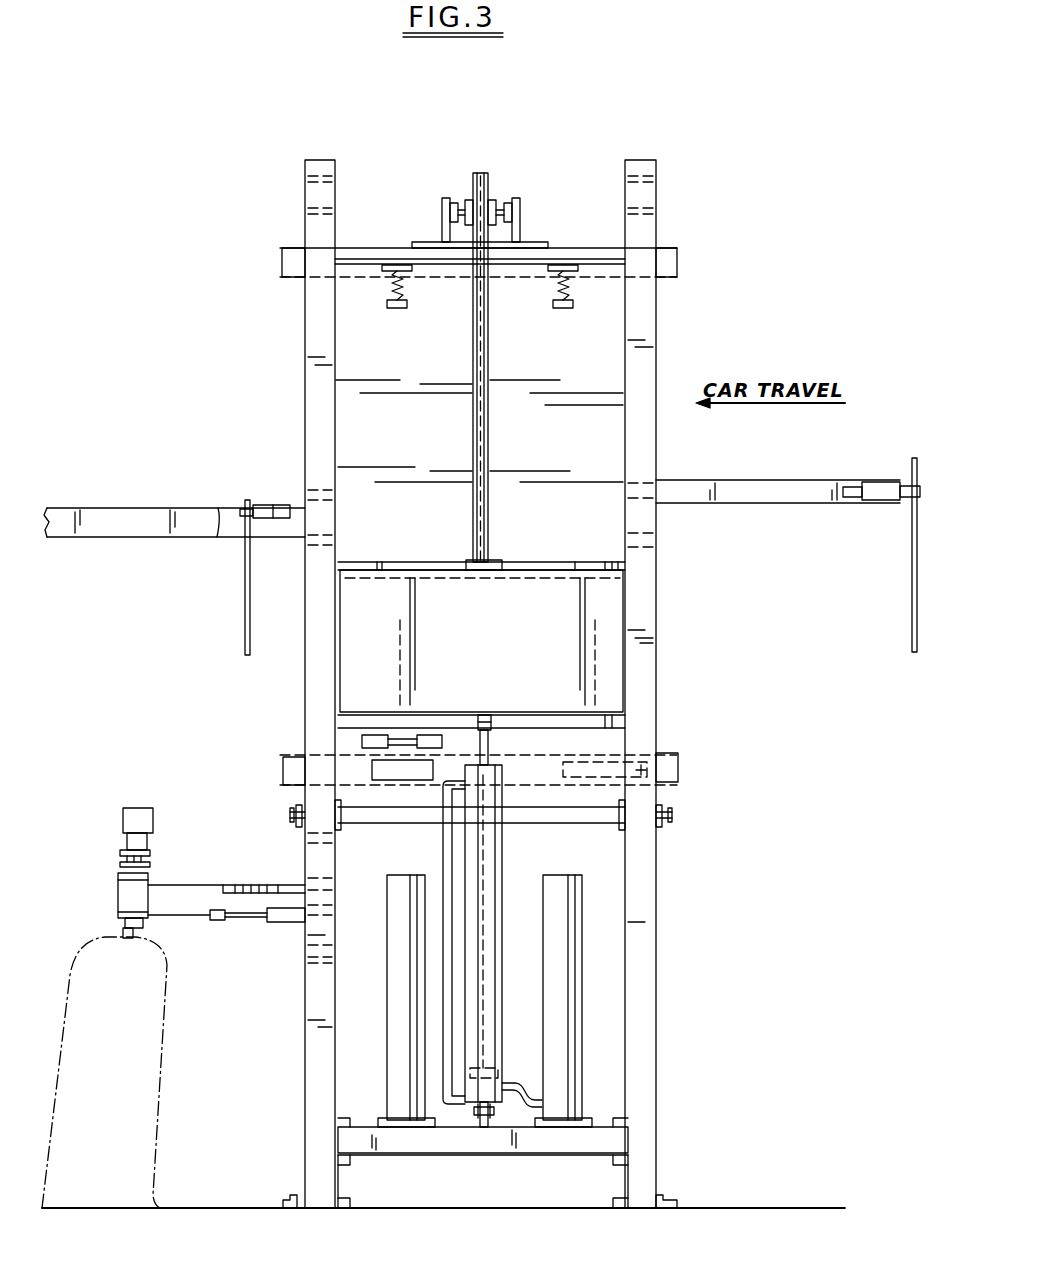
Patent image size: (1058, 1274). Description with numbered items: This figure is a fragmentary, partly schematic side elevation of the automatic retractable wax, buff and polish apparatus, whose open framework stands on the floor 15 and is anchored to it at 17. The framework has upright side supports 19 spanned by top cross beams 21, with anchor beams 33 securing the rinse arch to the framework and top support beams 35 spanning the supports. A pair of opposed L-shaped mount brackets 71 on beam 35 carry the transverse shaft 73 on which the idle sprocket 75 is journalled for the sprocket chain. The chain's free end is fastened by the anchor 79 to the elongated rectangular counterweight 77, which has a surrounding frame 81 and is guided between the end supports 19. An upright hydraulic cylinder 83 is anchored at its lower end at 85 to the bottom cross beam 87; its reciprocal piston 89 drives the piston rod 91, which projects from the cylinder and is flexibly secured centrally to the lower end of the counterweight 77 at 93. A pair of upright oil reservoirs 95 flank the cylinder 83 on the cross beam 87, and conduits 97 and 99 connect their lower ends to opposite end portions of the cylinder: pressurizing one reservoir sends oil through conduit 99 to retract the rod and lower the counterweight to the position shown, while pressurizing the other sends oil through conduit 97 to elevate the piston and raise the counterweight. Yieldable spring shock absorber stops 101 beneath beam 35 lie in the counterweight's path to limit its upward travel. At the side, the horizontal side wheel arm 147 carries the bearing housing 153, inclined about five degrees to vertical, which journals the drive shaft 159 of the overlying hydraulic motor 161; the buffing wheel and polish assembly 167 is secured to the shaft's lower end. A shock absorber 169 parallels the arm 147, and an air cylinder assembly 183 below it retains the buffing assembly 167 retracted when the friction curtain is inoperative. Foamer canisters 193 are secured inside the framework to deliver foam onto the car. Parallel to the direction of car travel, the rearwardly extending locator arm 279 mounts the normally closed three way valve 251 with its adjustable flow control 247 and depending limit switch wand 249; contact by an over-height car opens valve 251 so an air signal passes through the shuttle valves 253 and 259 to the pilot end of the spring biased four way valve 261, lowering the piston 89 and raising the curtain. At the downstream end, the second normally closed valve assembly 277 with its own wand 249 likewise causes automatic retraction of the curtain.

The floor 15 is at (733, 1205).
The anchor 17 is at (293, 1197).
The upright side supports 19 is at (305, 1075).
The top cross beams 21 is at (645, 200).
The anchor beams 33 is at (137, 519).
The top support beams 35 is at (660, 247).
The L-shaped mount brackets 71 is at (522, 233).
The transverse shaft 73 is at (456, 200).
The idle sprocket 75 is at (490, 190).
The counterweight 77 is at (481, 645).
The anchor 79 is at (494, 560).
The surrounding frame 81 is at (612, 735).
The hydraulic cylinder 83 is at (492, 871).
The anchor 85 is at (474, 1110).
The bottom cross beam 87 is at (537, 1140).
The piston 89 is at (576, 562).
The piston rod 91 is at (490, 748).
The flexible connection 93 is at (488, 716).
The oil reservoirs 95 is at (398, 882).
The conduit 97 is at (522, 1083).
The conduit 99 is at (443, 843).
The spring shock absorber stops 101 is at (396, 310).
The side wheel arm 147 is at (195, 884).
The bearing housing 153 is at (130, 893).
The drive shaft 159 is at (137, 936).
The hydraulic motor 161 is at (140, 815).
The buffing wheel and polish assembly 167 is at (155, 1028).
The shock absorber 169 is at (285, 884).
The air cylinder assembly 183 is at (283, 924).
The foamer canisters 193 is at (680, 768).
The adjustable flow control 247 is at (848, 497).
The limit switch wand 249 is at (245, 590).
The normally closed three way valve 251 is at (885, 482).
The shuttle valve 253 is at (362, 742).
The shuttle valve 259 is at (432, 735).
The spring biased four way valve 261 is at (416, 770).
The second normally closed three way valve 277 is at (266, 504).
The locator arm 279 is at (790, 488).